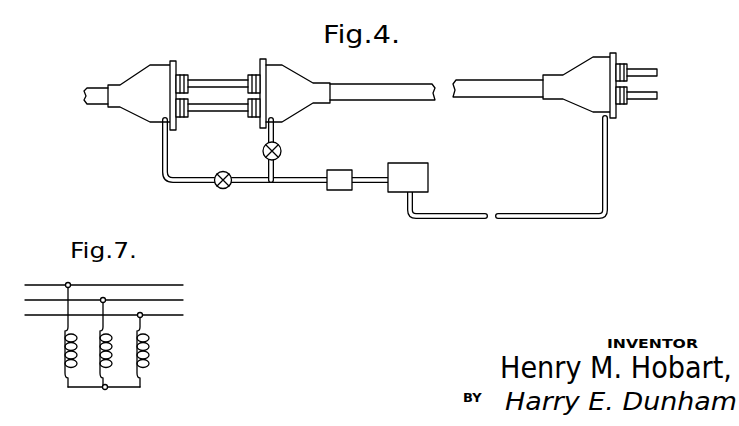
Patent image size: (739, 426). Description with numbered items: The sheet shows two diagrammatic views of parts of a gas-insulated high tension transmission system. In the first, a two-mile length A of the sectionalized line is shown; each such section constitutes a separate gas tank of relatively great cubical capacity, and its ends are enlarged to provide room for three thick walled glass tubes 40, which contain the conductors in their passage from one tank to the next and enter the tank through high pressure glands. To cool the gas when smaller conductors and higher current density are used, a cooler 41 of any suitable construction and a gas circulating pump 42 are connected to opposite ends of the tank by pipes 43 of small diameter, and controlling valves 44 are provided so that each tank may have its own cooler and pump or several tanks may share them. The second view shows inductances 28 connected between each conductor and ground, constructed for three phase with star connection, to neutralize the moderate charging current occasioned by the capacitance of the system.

In FIG. 4, the thick walled glass tubes 40 is at (213, 76).
In FIG. 4, the cooler 41 is at (405, 166).
In FIG. 4, the gas circulating pump 42 is at (339, 170).
In FIG. 4, the pipes 43 is at (452, 219).
In FIG. 4, the controlling valves 44 is at (262, 152).
In FIG. 4, the two-mile length A is at (259, 94).
In FIG. 7, the inductances 28 is at (63, 357).